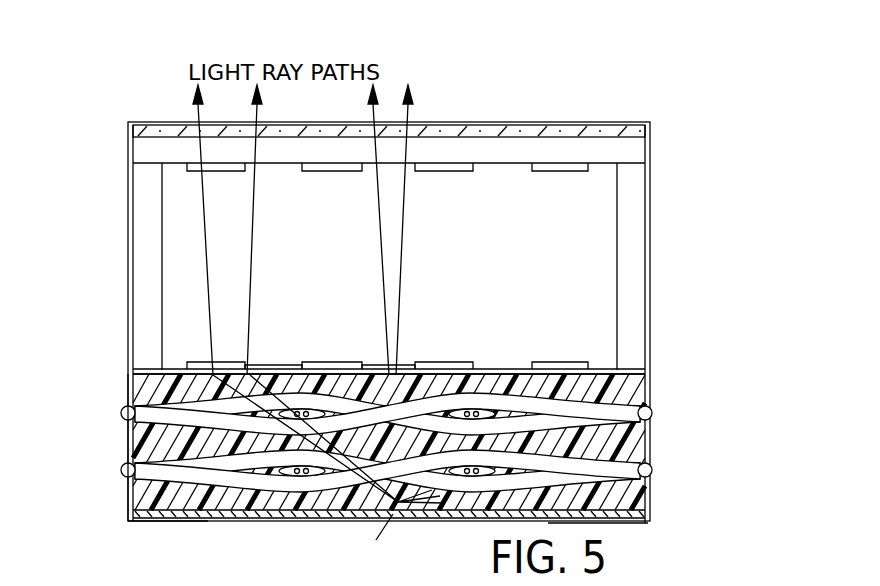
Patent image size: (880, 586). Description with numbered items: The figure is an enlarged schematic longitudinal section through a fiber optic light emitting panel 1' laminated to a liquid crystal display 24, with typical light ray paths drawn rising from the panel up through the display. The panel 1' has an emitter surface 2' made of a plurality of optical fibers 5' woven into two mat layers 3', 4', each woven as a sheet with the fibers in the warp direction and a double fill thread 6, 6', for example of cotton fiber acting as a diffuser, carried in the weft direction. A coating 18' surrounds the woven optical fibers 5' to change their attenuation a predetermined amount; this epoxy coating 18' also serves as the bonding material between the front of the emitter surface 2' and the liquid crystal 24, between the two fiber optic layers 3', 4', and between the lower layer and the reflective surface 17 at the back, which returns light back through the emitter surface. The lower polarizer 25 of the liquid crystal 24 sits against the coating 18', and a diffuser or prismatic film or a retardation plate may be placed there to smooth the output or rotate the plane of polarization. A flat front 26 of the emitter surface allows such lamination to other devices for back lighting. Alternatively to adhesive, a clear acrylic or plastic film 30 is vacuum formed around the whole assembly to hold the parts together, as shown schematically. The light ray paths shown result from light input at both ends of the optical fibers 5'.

The liquid crystal display 24 is at (642, 210).
The clear acrylic or plastic film 30 is at (648, 287).
The lower polarizer 25 is at (258, 372).
The flat front 26 is at (368, 372).
The coating 18' is at (389, 415).
The optical fibers 5' is at (387, 436).
The fiber optic layer 3' is at (434, 389).
The fiber optic panel 1' is at (392, 436).
The fiber optic layer 4' is at (430, 500).
The emitter surface 2' is at (88, 447).
The fill thread 6 is at (290, 509).
The fill thread 6' is at (307, 511).
The reflective surface 17 is at (390, 533).